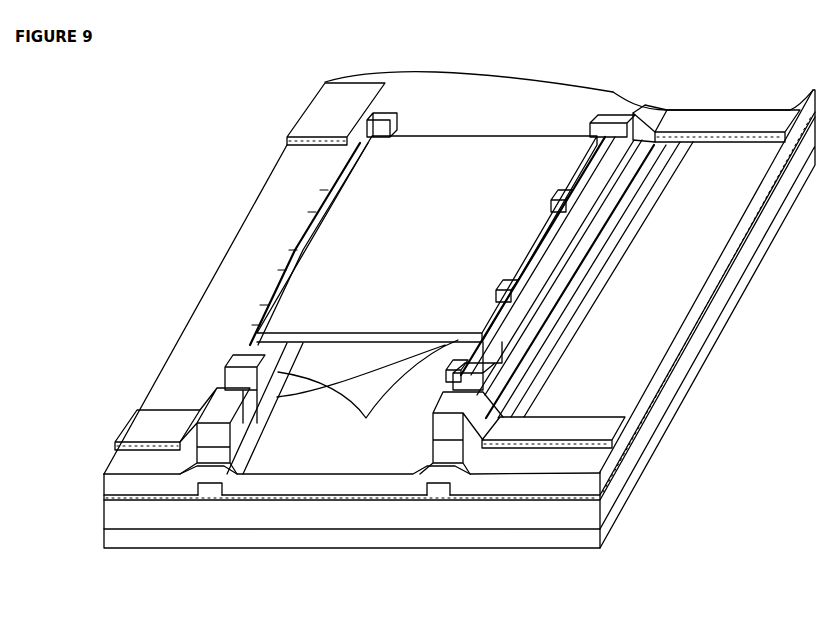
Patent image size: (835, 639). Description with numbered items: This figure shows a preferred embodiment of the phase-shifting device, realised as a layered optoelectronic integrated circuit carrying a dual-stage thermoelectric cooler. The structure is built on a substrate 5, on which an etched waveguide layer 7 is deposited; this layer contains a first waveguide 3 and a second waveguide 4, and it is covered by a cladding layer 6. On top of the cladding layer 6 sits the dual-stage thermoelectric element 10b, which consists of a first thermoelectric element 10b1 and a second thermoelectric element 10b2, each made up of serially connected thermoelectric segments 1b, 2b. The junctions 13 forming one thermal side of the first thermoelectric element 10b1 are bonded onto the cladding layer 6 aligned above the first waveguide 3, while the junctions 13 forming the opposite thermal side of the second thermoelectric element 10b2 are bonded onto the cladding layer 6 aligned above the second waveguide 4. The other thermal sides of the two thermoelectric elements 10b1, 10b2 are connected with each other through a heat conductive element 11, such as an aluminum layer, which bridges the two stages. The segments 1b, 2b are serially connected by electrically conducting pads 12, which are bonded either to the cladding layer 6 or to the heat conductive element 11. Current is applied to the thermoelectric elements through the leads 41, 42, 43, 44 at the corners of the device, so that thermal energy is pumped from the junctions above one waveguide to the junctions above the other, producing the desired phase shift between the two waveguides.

The thermoelectric segment 1b is at (507, 367).
The thermoelectric segment 2b is at (540, 322).
The first waveguide 3 is at (205, 490).
The second waveguide 4 is at (438, 488).
The substrate 5 is at (135, 538).
The cladding layer 6 is at (503, 487).
The waveguide layer 7 is at (248, 497).
The thermoelectric element 10b is at (287, 213).
The first thermoelectric element 10b1 is at (288, 250).
The second thermoelectric element 10b2 is at (592, 249).
The heat conductive element 11 is at (485, 148).
The electrically conducting pads 12 is at (588, 229).
The junctions 13 is at (367, 396).
The lead 41 is at (147, 428).
The lead 42 is at (322, 123).
The lead 43 is at (552, 432).
The lead 44 is at (730, 122).